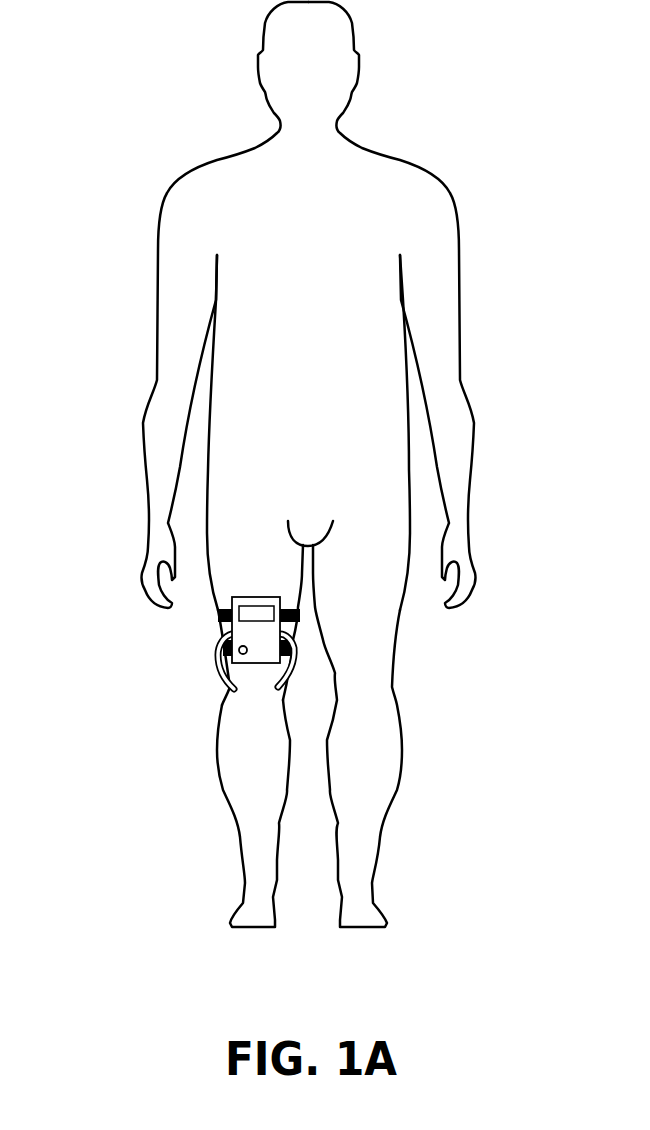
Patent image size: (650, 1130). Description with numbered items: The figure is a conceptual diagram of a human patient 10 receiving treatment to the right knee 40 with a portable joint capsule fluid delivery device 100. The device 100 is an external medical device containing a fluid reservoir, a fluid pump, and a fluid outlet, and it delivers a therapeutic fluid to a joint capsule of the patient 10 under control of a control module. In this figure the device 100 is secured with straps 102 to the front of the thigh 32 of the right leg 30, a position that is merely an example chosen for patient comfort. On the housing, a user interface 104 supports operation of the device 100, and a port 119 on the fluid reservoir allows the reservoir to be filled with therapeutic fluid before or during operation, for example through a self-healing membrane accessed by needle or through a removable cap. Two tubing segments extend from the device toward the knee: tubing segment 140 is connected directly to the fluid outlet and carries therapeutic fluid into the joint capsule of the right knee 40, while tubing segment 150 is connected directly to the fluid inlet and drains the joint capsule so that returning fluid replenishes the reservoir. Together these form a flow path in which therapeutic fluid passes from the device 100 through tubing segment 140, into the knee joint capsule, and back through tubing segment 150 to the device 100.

The human patient 10 is at (292, 464).
The right leg 30 is at (292, 736).
The thigh 32 is at (268, 580).
The right knee 40 is at (258, 690).
The portable joint capsule fluid delivery device 100 is at (275, 668).
The straps 102 is at (222, 619).
The user interface 104 is at (238, 607).
The port 119 is at (223, 677).
The tubing segment 140 is at (241, 654).
The tubing segment 150 is at (277, 683).